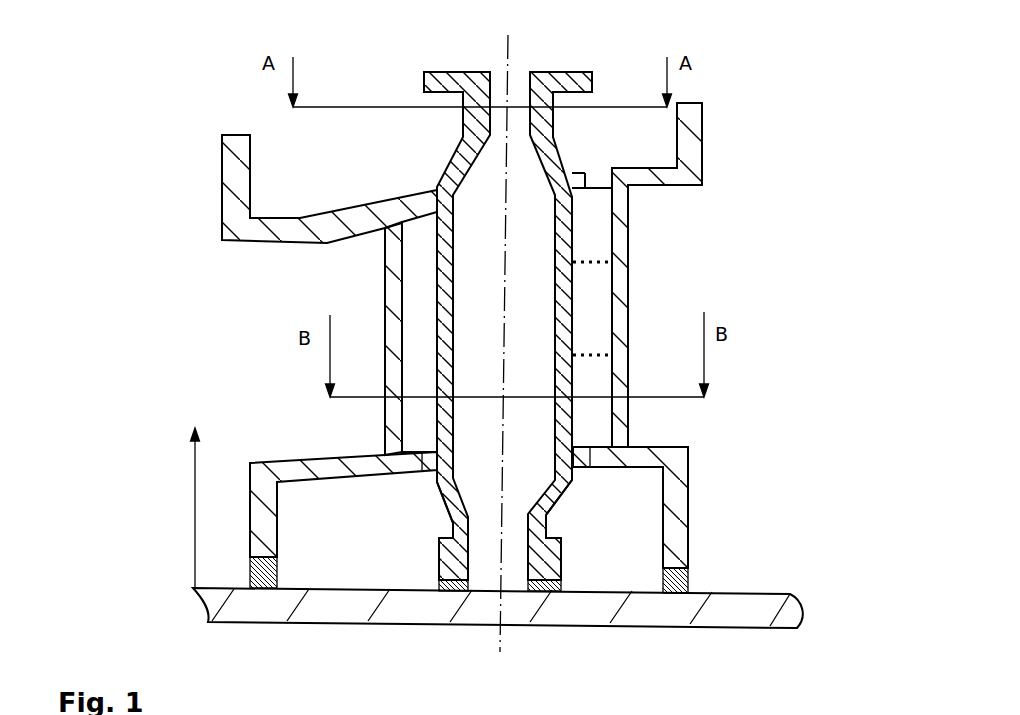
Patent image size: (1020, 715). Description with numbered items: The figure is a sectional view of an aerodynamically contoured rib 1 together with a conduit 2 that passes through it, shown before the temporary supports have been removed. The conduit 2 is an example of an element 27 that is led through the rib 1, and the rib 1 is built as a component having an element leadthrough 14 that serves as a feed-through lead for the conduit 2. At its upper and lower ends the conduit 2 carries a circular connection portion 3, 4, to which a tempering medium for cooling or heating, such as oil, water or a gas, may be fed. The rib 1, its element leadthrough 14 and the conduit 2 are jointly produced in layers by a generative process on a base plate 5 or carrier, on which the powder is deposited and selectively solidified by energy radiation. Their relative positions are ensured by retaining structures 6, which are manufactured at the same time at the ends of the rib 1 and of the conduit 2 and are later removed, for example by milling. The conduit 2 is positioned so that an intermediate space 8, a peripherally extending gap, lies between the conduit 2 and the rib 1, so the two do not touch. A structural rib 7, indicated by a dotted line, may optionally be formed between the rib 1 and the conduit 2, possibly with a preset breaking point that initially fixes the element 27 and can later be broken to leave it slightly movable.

The aerodynamically contoured rib 1 is at (641, 216).
The conduit 2 is at (553, 510).
The connection portion 3 is at (604, 62).
The connection portion 4 is at (422, 550).
The base plate 5 is at (193, 597).
The retaining structures 6 is at (273, 590).
The structural rib 7 is at (590, 305).
The intermediate space 8 is at (574, 223).
The element leadthrough 14 is at (407, 449).
The element 27 is at (570, 424).